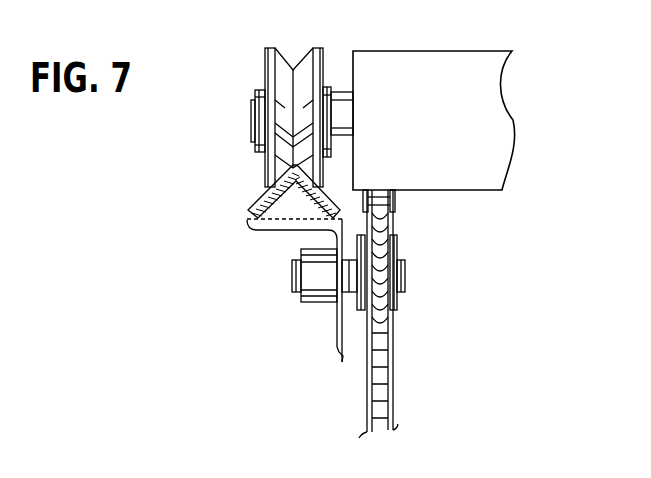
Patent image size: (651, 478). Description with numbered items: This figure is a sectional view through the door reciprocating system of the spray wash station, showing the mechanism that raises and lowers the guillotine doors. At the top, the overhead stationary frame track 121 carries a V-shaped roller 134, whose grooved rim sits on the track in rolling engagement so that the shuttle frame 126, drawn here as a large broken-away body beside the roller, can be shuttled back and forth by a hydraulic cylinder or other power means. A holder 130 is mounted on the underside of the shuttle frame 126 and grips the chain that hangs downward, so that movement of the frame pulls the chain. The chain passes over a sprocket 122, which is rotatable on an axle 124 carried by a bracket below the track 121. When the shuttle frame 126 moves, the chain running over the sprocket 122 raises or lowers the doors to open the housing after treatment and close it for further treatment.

The overhead stationary frame track 121 is at (262, 203).
The sprocket 122 is at (400, 252).
The axle 124 is at (292, 277).
The shuttle frame 126 is at (386, 63).
The holder 130 is at (397, 199).
The V-shaped roller 134 is at (266, 67).